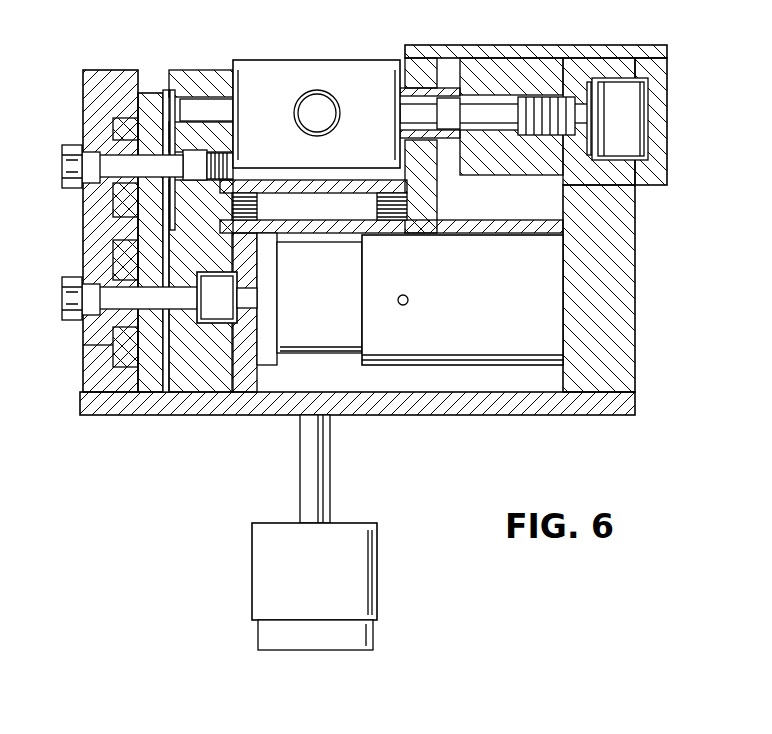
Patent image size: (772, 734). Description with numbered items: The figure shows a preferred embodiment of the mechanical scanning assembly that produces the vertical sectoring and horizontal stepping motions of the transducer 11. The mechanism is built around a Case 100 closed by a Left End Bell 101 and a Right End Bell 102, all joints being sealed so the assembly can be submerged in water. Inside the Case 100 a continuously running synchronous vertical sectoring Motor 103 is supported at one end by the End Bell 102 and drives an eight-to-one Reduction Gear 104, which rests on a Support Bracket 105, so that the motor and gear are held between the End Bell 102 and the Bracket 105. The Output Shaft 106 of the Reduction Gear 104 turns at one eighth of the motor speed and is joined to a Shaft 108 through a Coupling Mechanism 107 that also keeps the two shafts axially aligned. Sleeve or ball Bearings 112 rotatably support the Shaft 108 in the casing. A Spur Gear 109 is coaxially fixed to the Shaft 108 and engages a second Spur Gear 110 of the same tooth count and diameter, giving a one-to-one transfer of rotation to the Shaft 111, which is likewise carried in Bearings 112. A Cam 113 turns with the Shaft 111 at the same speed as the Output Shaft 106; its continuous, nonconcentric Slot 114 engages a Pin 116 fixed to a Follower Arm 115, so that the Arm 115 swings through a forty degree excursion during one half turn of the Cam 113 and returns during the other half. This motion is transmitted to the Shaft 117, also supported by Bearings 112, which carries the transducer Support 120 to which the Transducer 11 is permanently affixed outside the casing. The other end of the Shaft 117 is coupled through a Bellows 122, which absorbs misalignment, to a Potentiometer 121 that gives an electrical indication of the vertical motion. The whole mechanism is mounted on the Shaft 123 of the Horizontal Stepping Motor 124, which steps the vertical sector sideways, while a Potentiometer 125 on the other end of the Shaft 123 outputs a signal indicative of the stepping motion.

The transducer 11 is at (310, 122).
The case 100 is at (493, 45).
The left end bell 101 is at (83, 241).
The right end bell 102 is at (636, 280).
The vertical sectoring motor 103 is at (453, 284).
The reduction gear 104 is at (323, 284).
The support bracket 105 is at (247, 416).
The output shaft 106 is at (240, 287).
The coupling mechanism 107 is at (237, 283).
The shaft 108 is at (97, 321).
The spur gear 109 is at (110, 328).
The second spur gear 110 is at (110, 130).
The shaft 111 is at (100, 188).
The bearings 112 is at (100, 143).
The cam 113 is at (173, 240).
The slot 114 is at (115, 196).
The follower arm 115 is at (183, 183).
The pin 116 is at (173, 222).
The shaft 117 is at (237, 113).
The transducer support 120 is at (298, 59).
The potentiometer 121 is at (609, 108).
The bellows 122 is at (538, 140).
The shaft 123 is at (330, 458).
The horizontal stepping motor 124 is at (376, 568).
The potentiometer 125 is at (268, 638).